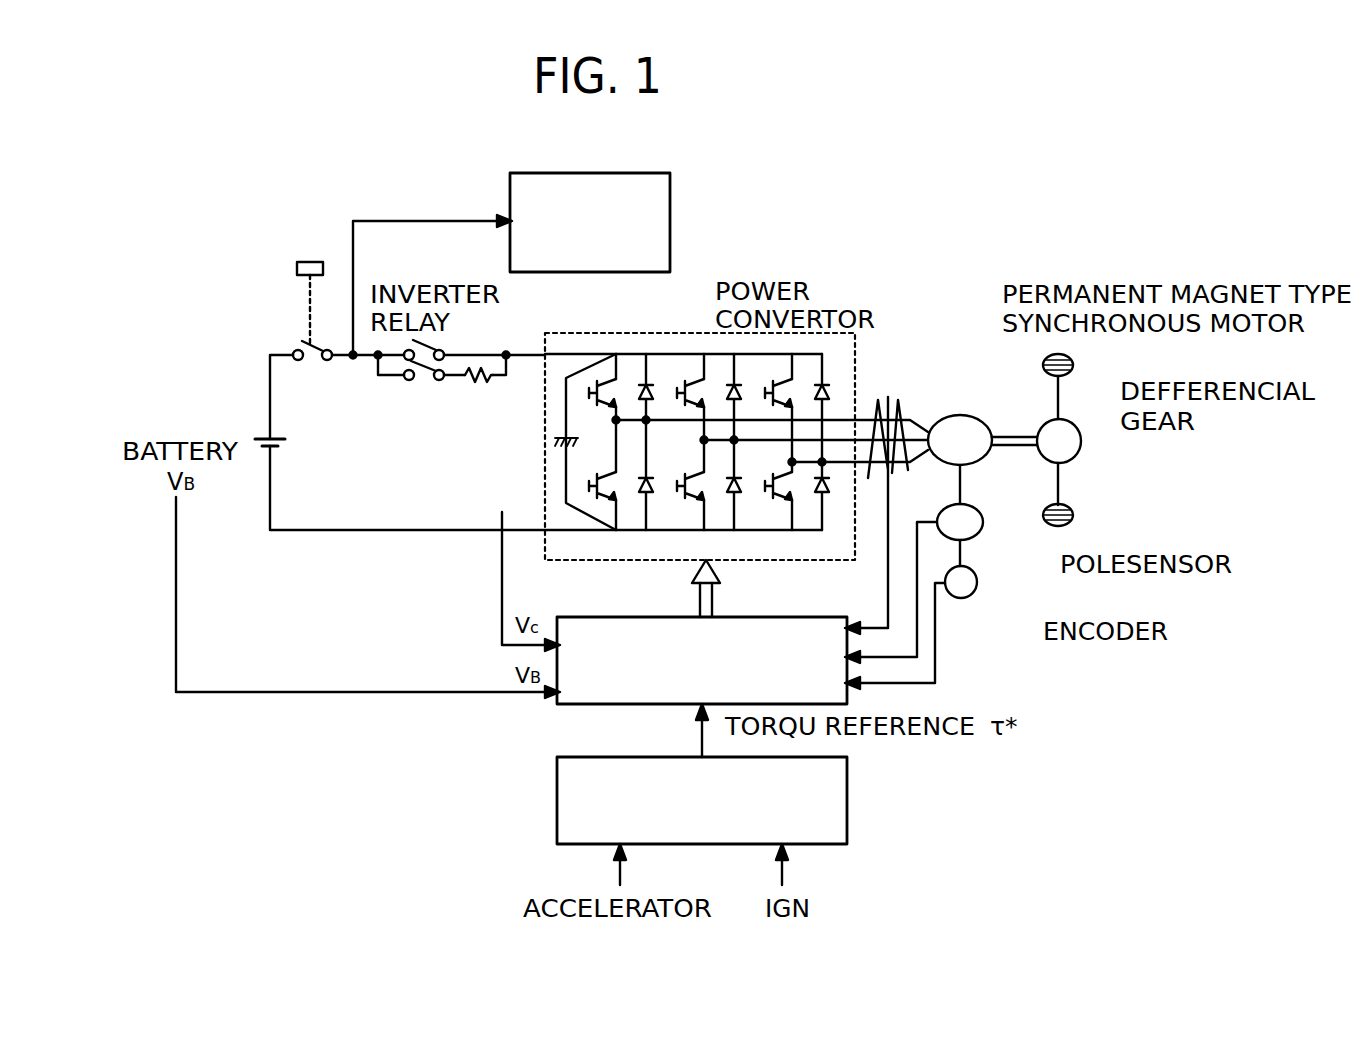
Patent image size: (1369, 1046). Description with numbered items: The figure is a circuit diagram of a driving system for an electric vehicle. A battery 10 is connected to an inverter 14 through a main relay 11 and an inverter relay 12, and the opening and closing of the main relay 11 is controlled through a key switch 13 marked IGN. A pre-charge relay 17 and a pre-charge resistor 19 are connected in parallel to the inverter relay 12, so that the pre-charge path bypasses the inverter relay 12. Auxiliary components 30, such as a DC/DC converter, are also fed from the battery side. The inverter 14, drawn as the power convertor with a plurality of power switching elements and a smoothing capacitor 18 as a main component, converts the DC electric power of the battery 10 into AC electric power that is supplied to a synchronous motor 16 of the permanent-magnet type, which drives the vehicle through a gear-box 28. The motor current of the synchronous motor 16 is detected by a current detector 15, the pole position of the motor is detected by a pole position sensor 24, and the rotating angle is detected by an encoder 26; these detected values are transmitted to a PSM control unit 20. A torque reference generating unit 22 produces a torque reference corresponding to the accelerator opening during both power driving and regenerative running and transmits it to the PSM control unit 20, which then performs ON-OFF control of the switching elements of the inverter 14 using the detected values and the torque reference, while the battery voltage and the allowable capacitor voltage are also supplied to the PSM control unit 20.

The battery 10 is at (262, 432).
The main relay 11 is at (294, 345).
The inverter relay 12 is at (508, 340).
The key switch 13 is at (310, 288).
The inverter 14 is at (656, 360).
The current detector 15 is at (882, 392).
The synchronous motor 16 is at (953, 415).
The pre-charge relay 17 is at (437, 383).
The smoothing capacitor 18 is at (553, 442).
The pre-charge resistor 19 is at (470, 385).
The PSM control unit 20 is at (605, 617).
The torque reference generating unit 22 is at (847, 795).
The pole position sensor 24 is at (983, 530).
The encoder 26 is at (978, 593).
The gear-box 28 is at (1073, 424).
The auxiliary components 30 is at (508, 200).